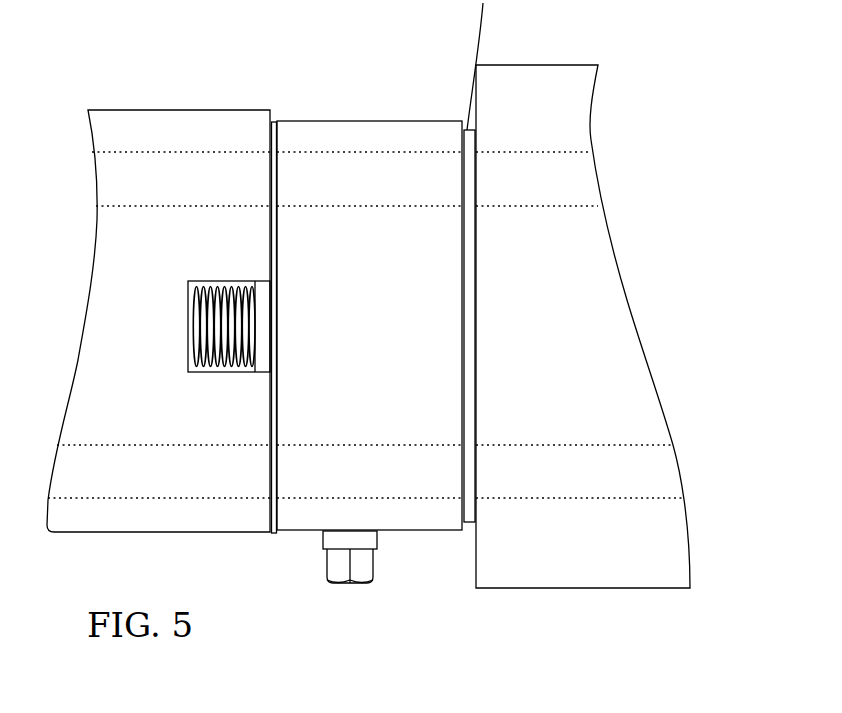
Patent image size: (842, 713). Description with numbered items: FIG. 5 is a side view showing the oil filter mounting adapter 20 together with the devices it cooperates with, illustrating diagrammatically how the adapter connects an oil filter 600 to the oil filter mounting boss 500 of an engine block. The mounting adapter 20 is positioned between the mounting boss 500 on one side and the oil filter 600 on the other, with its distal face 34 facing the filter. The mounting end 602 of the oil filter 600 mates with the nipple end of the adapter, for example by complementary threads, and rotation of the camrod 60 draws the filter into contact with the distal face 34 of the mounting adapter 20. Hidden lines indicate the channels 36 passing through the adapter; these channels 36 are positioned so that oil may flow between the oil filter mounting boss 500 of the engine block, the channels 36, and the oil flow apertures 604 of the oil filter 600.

The oil filter mounting adapter 20 is at (392, 97).
The distal face 34 is at (273, 142).
The channels 36 is at (378, 192).
The camrod 60 is at (392, 589).
The oil filter mounting boss 500 is at (610, 305).
The oil filter 600 is at (102, 305).
The mounting end 602 is at (242, 373).
The oil flow apertures 604 is at (154, 192).